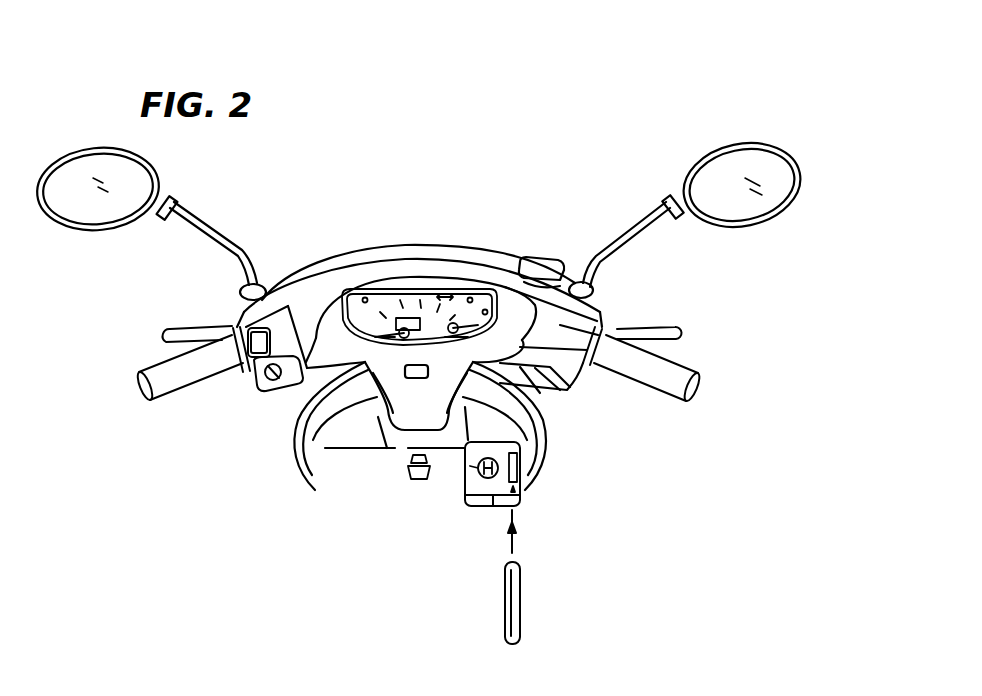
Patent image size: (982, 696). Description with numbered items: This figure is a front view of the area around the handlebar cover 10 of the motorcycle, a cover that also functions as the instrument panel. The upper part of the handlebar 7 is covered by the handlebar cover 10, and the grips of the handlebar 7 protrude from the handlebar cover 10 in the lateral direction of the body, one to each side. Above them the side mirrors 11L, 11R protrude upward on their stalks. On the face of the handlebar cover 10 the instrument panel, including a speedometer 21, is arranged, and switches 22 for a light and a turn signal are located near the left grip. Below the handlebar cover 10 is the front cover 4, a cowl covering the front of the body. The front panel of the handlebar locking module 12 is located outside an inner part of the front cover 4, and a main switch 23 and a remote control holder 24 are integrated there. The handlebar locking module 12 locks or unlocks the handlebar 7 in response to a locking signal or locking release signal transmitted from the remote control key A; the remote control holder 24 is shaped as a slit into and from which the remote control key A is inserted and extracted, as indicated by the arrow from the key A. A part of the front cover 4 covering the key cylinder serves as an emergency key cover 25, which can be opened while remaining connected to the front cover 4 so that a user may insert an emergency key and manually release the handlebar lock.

The handlebar cover 10 is at (287, 313).
The speedometer 21 is at (463, 297).
The left side mirror 11L is at (80, 203).
The right side mirror 11R is at (747, 203).
The switches 22 is at (262, 378).
The handlebar 7 is at (680, 370).
The front cover 4 is at (290, 468).
The main switch 23 is at (460, 478).
The emergency key cover 25 is at (468, 500).
The handlebar locking module 12 is at (490, 510).
The remote control holder 24 is at (519, 464).
The remote control key A is at (520, 597).